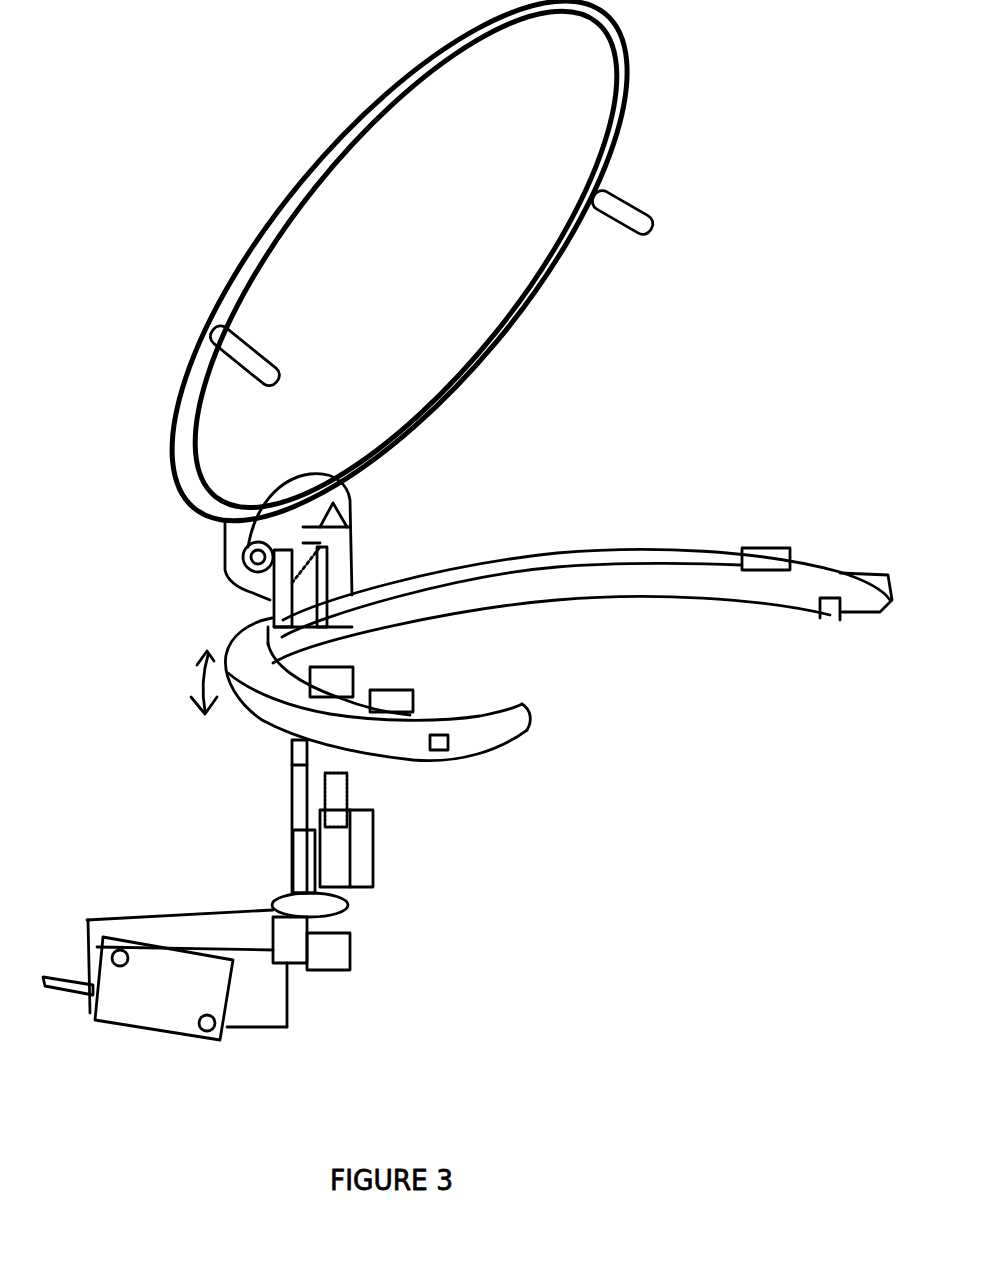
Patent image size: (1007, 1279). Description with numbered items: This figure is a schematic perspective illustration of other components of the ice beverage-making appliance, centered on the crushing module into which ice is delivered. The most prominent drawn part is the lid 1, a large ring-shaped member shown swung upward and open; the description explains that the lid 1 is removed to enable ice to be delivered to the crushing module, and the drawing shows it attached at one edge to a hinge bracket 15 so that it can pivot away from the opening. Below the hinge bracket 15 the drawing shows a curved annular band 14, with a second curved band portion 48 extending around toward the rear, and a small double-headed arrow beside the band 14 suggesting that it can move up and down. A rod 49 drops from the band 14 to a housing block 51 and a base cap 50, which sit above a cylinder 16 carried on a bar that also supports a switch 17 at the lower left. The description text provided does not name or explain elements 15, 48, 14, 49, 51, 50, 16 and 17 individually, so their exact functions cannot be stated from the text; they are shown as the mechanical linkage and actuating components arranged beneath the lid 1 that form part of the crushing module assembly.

The lid 1 is at (497, 228).
The hinge bracket 15 is at (330, 560).
The far portion of annular band 48 is at (585, 587).
The annular band 14 is at (313, 675).
The rod 49 is at (343, 802).
The housing block 51 is at (370, 850).
The base cap 50 is at (350, 903).
The cylinder 16 is at (297, 938).
The switch 17 is at (177, 995).